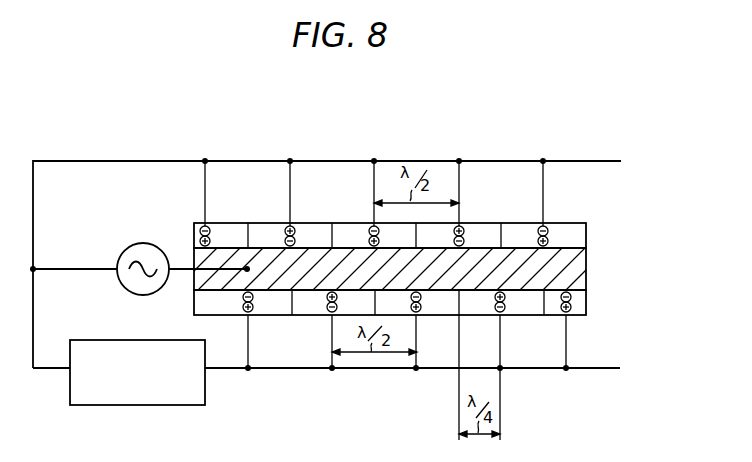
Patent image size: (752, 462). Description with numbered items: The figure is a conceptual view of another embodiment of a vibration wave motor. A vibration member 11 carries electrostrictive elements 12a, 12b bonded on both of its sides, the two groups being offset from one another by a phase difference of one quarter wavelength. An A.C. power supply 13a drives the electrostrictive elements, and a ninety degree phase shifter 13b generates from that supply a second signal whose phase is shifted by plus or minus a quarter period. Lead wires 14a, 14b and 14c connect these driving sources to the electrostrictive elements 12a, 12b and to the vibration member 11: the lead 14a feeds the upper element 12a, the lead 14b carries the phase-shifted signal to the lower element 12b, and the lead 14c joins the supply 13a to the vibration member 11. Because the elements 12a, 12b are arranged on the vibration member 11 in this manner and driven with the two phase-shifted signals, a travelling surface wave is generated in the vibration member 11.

The vibration member 11 is at (583, 268).
The electrostrictive element 12a is at (586, 237).
The electrostrictive element 12b is at (586, 301).
The A.C. power supply 13a is at (152, 244).
The 90° phase shifter 13b is at (143, 405).
The first lead wire 14a is at (108, 160).
The second lead wire 14b is at (224, 369).
The center lead wire 14c is at (178, 272).